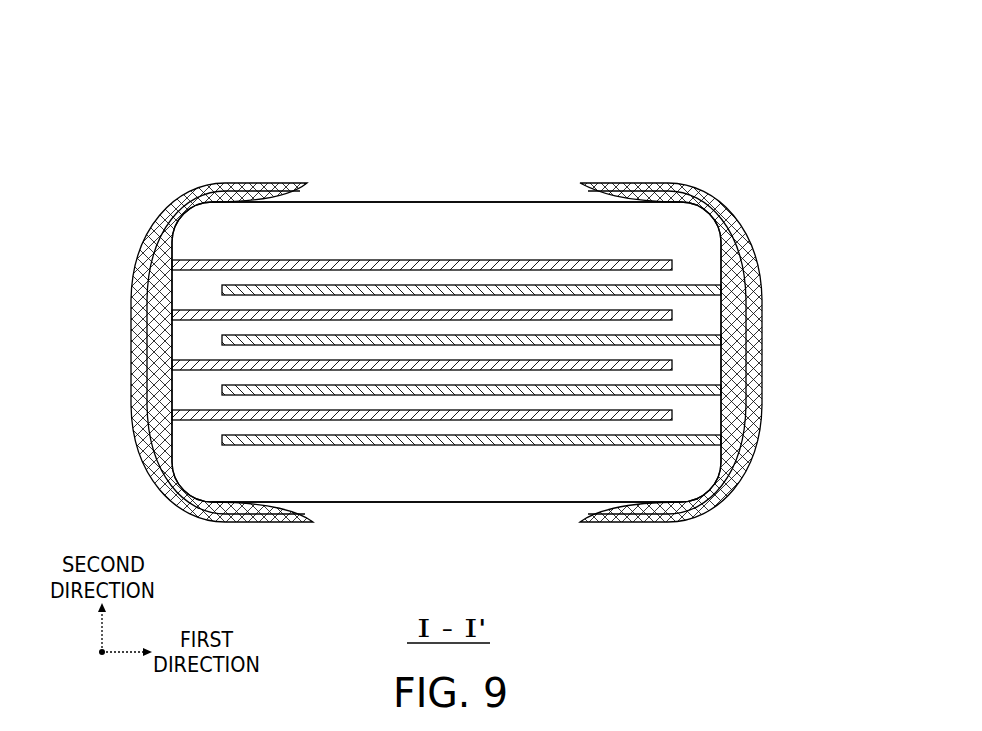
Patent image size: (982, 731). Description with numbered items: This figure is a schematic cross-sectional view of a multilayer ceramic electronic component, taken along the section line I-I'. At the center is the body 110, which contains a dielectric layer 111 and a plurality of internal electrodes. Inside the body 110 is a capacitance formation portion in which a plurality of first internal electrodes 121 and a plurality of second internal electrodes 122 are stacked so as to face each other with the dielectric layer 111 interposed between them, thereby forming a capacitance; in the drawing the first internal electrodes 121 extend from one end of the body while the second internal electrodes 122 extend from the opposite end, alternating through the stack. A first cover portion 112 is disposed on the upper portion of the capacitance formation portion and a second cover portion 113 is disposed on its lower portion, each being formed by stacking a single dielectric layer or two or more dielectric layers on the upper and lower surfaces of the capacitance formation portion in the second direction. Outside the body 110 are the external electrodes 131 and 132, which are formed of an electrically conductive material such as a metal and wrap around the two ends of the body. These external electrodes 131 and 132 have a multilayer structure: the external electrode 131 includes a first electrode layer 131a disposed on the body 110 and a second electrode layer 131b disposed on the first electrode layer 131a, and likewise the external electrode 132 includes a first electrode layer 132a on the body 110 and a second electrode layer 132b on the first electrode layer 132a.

The body 110 is at (553, 202).
The dielectric layer 111 is at (470, 275).
The first cover portion 112 is at (313, 225).
The second cover portion 113 is at (398, 488).
The first internal electrode 121 is at (365, 262).
The second internal electrode 122 is at (415, 285).
The external electrode 131 is at (179, 267).
The first electrode layer 131a is at (145, 326).
The second electrode layer 131b is at (131, 352).
The external electrode 132 is at (716, 267).
The first electrode layer 132a is at (763, 322).
The second electrode layer 132b is at (755, 353).